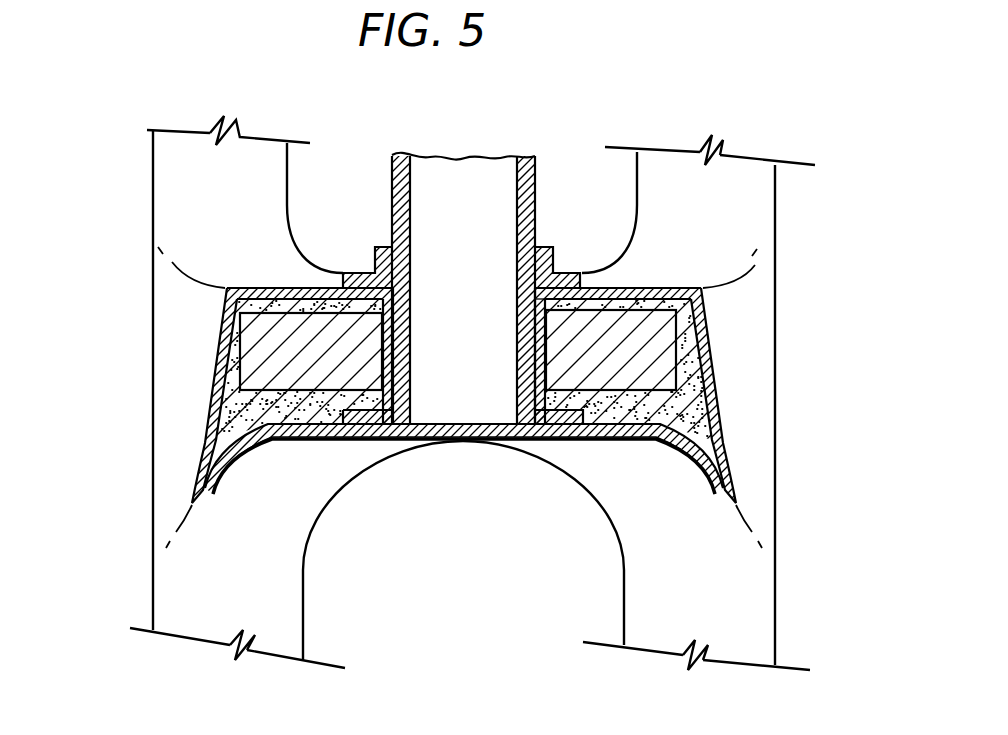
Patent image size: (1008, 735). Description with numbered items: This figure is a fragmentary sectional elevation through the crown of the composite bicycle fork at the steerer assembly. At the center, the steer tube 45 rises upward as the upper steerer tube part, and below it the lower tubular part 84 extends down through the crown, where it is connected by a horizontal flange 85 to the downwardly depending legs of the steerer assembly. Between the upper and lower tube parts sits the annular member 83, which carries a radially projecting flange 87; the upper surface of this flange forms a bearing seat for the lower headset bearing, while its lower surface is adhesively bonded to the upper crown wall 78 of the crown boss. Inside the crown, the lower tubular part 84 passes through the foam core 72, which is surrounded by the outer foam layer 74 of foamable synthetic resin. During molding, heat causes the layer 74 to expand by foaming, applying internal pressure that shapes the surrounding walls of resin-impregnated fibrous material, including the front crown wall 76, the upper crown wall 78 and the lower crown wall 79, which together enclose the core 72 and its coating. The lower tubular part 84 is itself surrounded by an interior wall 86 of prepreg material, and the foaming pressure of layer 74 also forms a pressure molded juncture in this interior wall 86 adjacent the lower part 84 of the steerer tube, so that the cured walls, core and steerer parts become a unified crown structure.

The steer tube 45 is at (537, 188).
The core 72 is at (655, 355).
The outer foam layer 74 is at (692, 380).
The front crown wall 76 is at (706, 300).
The upper crown wall 78 is at (653, 288).
The lower crown wall 79 is at (312, 440).
The annular member 83 is at (553, 262).
The lower tubular part 84 is at (492, 438).
The horizontal flange 85 is at (570, 425).
The interior wall 86 is at (540, 318).
The radially projecting flange 87 is at (350, 272).